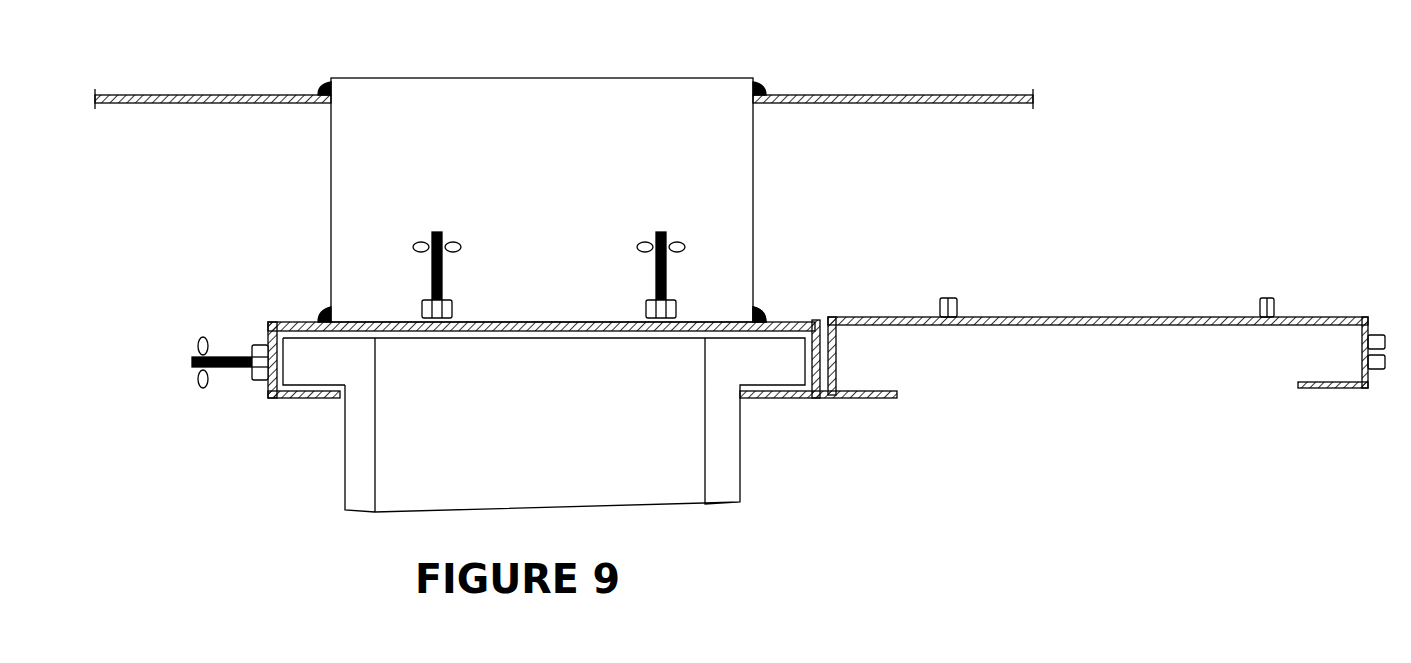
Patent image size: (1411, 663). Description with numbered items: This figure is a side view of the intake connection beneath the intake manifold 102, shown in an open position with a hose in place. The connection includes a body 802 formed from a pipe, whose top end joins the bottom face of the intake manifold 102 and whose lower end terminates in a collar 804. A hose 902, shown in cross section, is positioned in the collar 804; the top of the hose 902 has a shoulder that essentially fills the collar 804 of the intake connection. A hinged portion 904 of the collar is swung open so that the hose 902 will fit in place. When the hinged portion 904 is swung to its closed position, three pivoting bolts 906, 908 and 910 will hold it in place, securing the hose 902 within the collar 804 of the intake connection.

The intake manifold 102 is at (900, 95).
The body 802 is at (738, 170).
The collar 804 is at (757, 316).
The hose 902 is at (738, 452).
The hinged portion 904 is at (1290, 318).
The pivoting bolt 906 is at (238, 357).
The pivoting bolt 908 is at (437, 232).
The pivoting bolt 910 is at (661, 232).